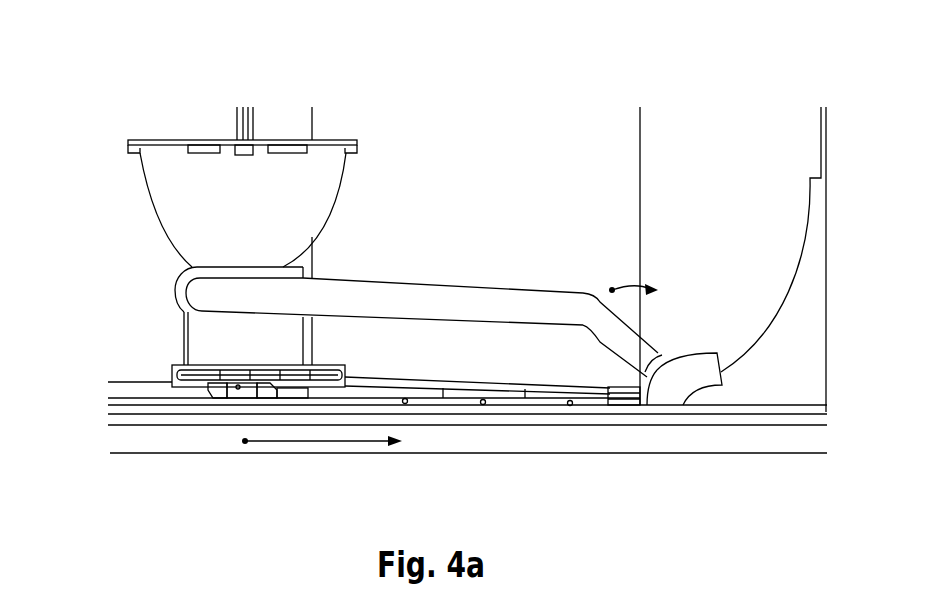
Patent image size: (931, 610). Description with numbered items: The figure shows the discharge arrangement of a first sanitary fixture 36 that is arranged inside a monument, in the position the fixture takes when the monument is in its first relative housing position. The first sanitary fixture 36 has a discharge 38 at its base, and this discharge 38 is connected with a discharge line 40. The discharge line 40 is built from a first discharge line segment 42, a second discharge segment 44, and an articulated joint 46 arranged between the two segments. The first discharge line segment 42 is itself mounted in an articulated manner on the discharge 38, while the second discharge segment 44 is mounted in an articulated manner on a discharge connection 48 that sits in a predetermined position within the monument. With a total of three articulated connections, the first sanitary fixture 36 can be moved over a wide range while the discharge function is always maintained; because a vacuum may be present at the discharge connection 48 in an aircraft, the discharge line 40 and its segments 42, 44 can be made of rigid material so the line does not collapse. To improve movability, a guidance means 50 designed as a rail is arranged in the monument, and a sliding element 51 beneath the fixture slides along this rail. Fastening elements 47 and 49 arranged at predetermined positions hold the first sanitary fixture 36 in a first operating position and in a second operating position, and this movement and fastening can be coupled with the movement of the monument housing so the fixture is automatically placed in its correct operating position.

The first sanitary fixture 36 is at (342, 125).
The discharge 38 is at (208, 291).
The discharge line 40 is at (474, 226).
The first discharge line segment 42 is at (385, 297).
The second discharge segment 44 is at (627, 342).
The articulated joint 46 is at (592, 284).
The fastening element 47 is at (188, 388).
The discharge connection 48 is at (640, 410).
The fastening element 49 is at (293, 392).
The guidance means 50 is at (137, 387).
The sliding element 51 is at (223, 383).